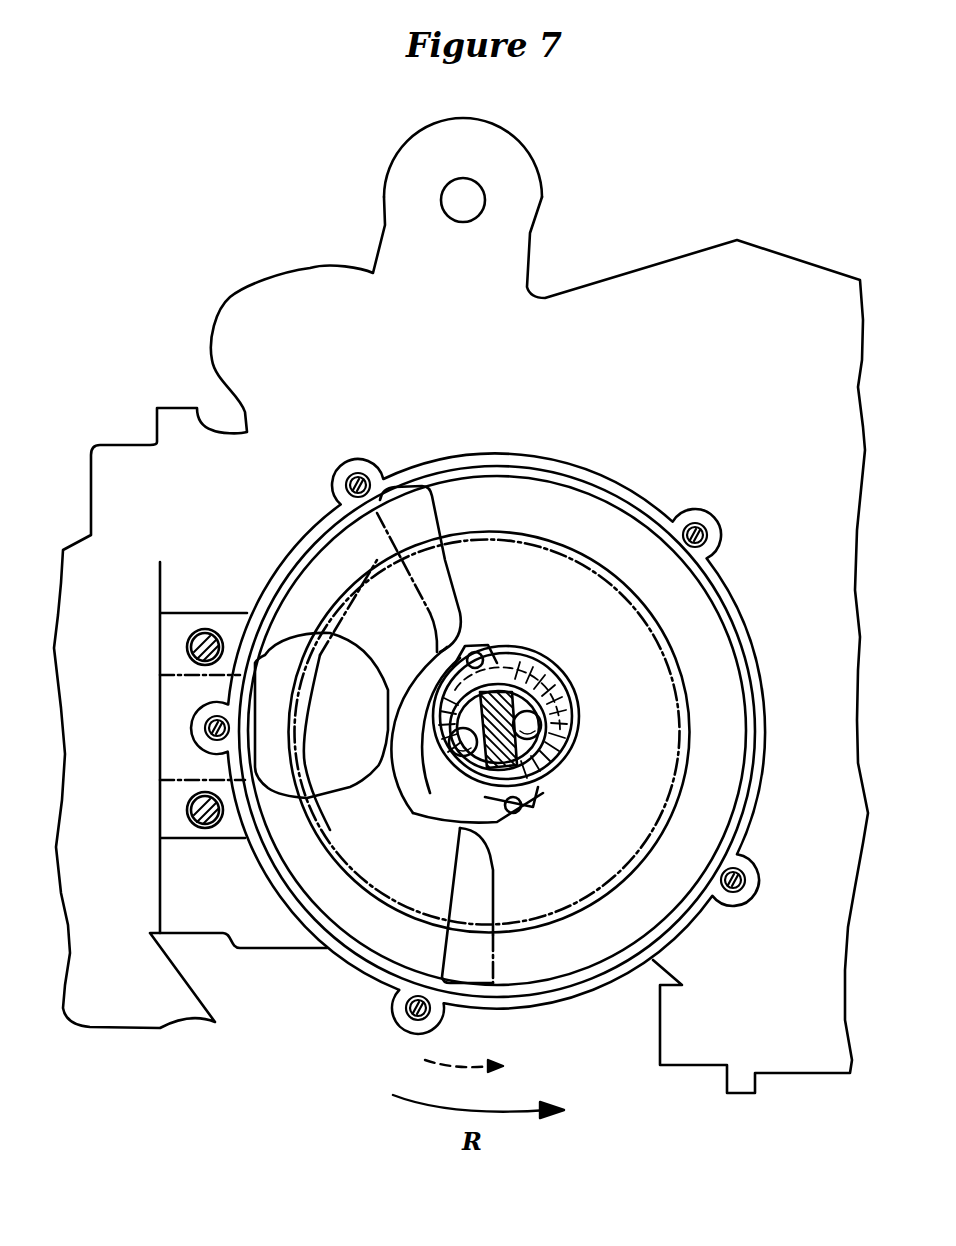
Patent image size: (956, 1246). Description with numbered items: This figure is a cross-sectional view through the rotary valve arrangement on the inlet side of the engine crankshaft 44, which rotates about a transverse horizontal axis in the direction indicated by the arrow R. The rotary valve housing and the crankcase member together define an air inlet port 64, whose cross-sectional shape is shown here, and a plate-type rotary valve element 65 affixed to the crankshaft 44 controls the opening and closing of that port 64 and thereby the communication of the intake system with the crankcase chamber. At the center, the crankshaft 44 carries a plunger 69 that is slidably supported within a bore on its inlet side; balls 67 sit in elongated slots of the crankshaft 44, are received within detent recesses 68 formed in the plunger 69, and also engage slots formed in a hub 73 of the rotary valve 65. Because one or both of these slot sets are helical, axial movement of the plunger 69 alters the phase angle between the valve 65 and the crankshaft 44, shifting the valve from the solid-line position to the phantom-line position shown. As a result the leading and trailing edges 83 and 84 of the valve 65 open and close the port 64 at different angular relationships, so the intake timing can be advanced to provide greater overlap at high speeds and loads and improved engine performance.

The crankshaft 44 is at (527, 700).
The air inlet port 64 is at (290, 660).
The rotary valve element 65 is at (537, 500).
The balls 67 is at (536, 714).
The detent recesses 68 is at (548, 760).
The plunger 69 is at (495, 668).
The hub 73 is at (432, 652).
The leading edge 83 is at (425, 955).
The trailing edge 84 is at (404, 484).